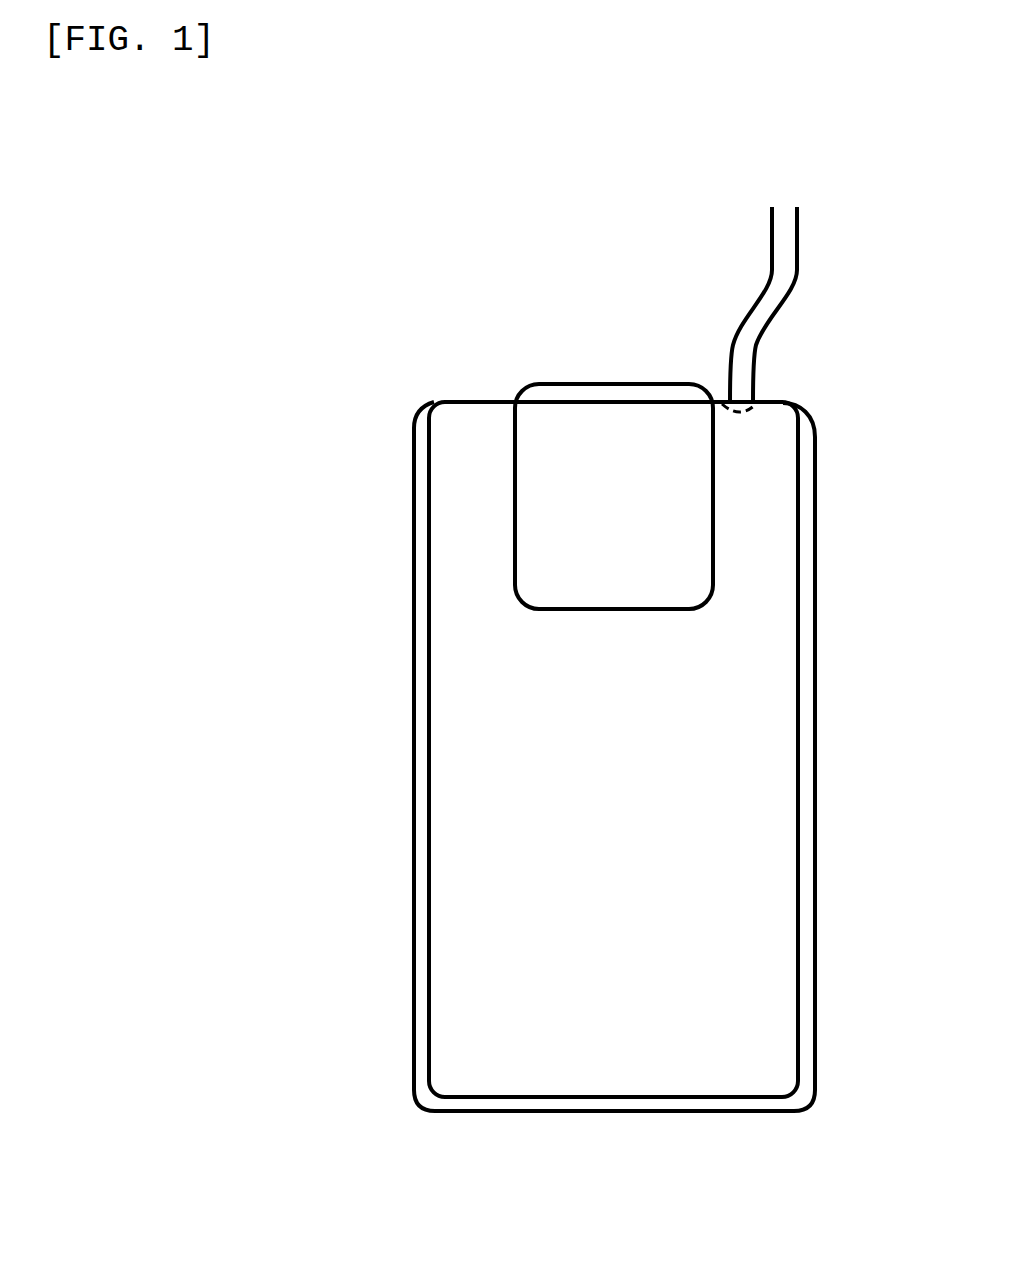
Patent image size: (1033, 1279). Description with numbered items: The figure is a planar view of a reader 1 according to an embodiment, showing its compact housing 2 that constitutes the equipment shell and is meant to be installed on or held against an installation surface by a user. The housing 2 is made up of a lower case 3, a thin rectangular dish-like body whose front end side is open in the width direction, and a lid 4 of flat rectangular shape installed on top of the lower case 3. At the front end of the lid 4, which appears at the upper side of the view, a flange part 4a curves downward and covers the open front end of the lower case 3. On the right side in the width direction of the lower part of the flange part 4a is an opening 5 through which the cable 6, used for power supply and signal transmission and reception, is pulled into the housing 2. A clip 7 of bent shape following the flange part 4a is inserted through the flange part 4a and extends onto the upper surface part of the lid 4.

The reader 1 is at (387, 337).
The housing 2 is at (405, 733).
The lower case 3 is at (807, 790).
The lid 4 is at (777, 713).
The flange part 4a is at (775, 397).
The opening 5 is at (755, 407).
The cable 6 is at (788, 248).
The clip 7 is at (573, 403).